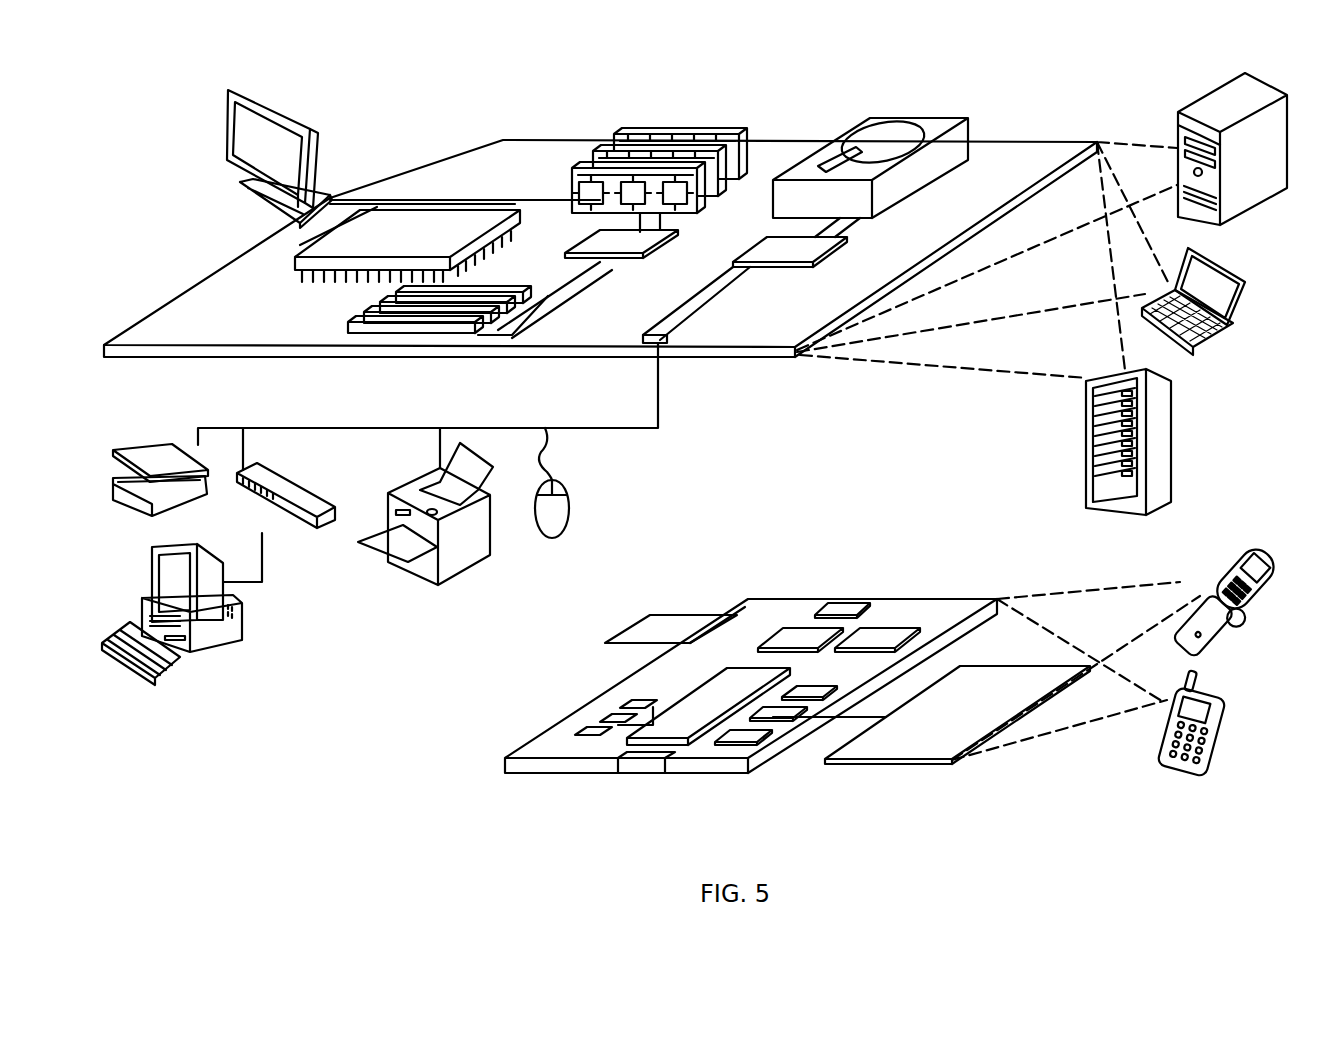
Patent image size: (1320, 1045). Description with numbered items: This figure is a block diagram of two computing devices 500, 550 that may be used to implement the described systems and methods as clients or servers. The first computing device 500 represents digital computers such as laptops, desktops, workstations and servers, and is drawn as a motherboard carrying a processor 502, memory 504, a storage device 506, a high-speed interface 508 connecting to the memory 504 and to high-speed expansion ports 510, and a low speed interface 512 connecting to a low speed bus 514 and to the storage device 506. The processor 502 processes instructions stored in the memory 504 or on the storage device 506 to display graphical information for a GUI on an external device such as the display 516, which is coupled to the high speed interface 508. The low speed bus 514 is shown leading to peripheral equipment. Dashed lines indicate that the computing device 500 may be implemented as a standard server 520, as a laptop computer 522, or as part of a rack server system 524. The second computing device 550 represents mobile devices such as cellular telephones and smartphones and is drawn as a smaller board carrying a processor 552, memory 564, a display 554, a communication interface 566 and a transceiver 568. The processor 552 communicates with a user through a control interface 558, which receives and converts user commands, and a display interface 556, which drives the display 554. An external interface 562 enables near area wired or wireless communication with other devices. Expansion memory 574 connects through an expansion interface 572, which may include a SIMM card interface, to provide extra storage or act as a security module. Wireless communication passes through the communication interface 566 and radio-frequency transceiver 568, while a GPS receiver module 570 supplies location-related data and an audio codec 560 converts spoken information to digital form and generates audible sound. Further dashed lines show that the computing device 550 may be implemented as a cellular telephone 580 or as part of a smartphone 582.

The computing device 500 is at (424, 110).
The processor 502 is at (303, 258).
The memory 504 is at (633, 137).
The storage device 506 is at (863, 118).
The high-speed interface 508 is at (600, 243).
The high-speed expansion ports 510 is at (363, 317).
The low speed interface 512 is at (770, 240).
The low speed bus 514 is at (663, 345).
The display 516 is at (238, 87).
The standard server 520 is at (1177, 127).
The laptop computer 522 is at (1240, 272).
The rack server system 524 is at (1086, 469).
The computing device 550 is at (484, 772).
The processor 552 is at (682, 727).
The display 554 is at (918, 745).
The display interface 556 is at (747, 733).
The control interface 558 is at (783, 712).
The audio codec 560 is at (805, 693).
The external interface 562 is at (647, 762).
The memory 564 is at (597, 717).
The communication interface 566 is at (802, 637).
The transceiver 568 is at (878, 637).
The GPS receiver module 570 is at (856, 604).
The expansion interface 572 is at (743, 613).
The expansion memory 574 is at (657, 613).
The cellular telephone 580 is at (1232, 555).
The smartphone 582 is at (1165, 732).